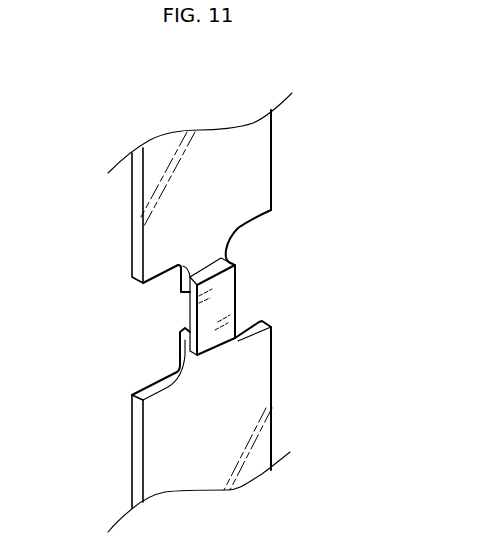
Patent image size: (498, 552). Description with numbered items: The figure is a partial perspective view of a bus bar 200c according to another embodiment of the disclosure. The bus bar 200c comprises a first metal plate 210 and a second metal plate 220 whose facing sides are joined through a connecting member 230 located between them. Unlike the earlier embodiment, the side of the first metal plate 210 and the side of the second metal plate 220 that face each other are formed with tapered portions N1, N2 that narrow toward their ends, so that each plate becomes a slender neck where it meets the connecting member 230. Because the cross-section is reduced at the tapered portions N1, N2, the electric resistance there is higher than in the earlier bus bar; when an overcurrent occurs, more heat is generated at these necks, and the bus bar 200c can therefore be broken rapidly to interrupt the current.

The bus bar 200c is at (103, 97).
The first metal plate 210 is at (258, 152).
The second metal plate 220 is at (255, 420).
The connecting part 230 is at (225, 303).
The tapered portion N1 is at (232, 243).
The tapered portion N2 is at (180, 368).